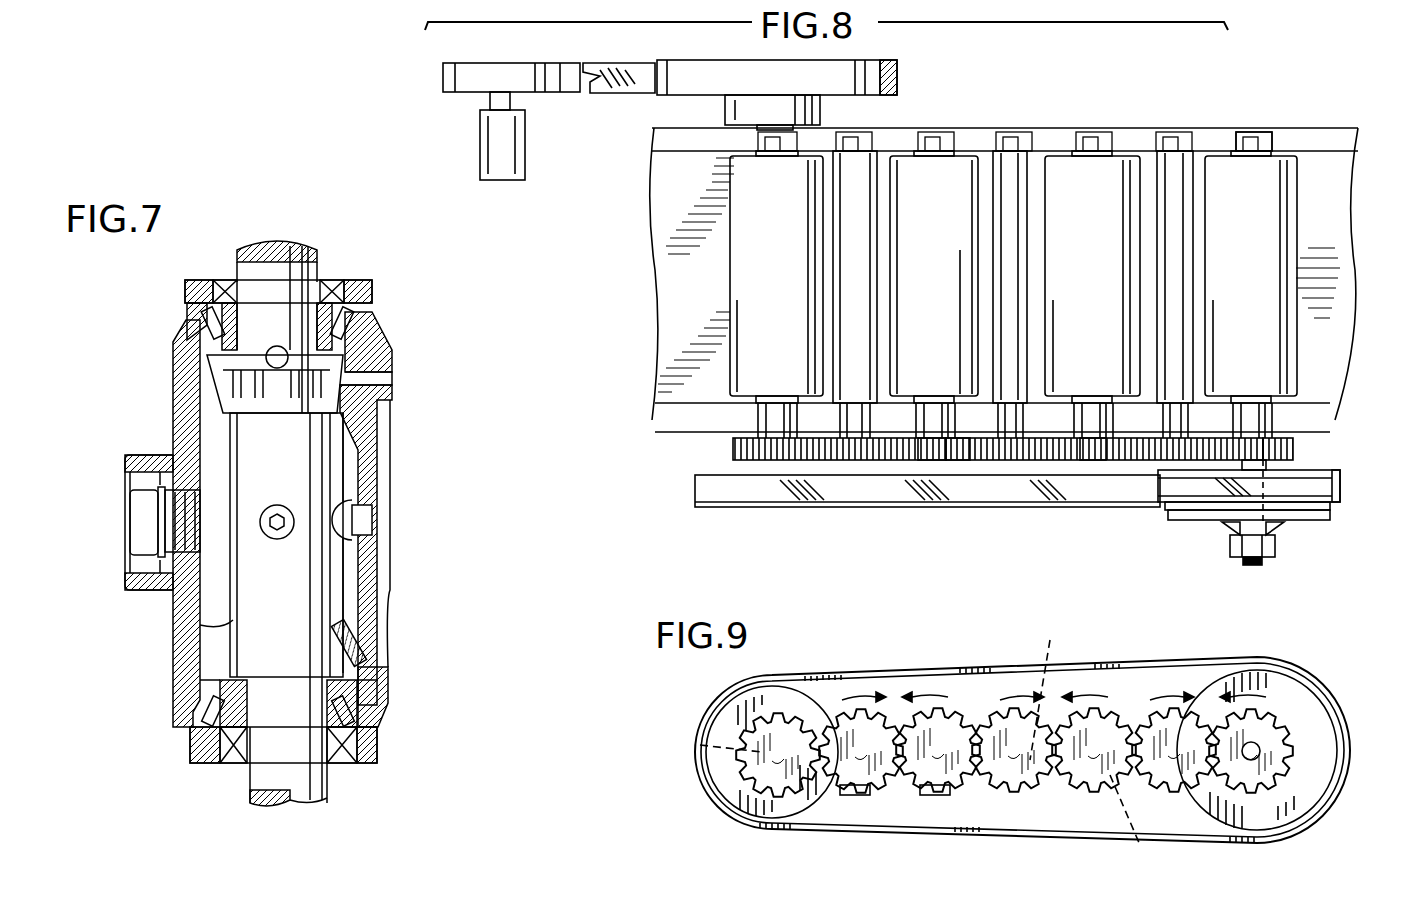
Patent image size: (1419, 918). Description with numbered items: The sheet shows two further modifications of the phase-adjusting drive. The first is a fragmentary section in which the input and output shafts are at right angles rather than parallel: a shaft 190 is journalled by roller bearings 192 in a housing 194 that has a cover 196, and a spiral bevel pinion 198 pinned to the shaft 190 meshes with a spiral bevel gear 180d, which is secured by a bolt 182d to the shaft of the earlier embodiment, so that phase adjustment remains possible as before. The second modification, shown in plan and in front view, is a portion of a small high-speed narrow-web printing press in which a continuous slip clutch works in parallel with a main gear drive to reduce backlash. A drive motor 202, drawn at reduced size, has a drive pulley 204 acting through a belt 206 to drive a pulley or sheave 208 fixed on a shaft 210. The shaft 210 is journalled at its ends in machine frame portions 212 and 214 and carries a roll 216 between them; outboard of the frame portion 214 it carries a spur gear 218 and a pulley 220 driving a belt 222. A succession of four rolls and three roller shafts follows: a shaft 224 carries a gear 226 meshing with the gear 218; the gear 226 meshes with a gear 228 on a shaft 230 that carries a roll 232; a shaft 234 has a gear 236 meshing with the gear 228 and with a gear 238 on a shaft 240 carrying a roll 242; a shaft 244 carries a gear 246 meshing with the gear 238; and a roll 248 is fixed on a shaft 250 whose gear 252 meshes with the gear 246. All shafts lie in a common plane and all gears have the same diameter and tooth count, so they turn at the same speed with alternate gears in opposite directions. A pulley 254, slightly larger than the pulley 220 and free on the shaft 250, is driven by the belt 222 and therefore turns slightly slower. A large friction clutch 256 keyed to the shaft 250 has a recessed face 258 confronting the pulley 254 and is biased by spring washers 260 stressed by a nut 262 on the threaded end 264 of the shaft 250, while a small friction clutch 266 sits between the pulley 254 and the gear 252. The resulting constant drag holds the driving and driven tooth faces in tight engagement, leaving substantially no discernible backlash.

In FIG. 7, the spiral bevel gear 180d is at (395, 470).
In FIG. 7, the bolt 182d is at (375, 520).
In FIG. 7, the shaft 190 is at (292, 262).
In FIG. 7, the roller bearings 192 is at (362, 312).
In FIG. 7, the housing 194 is at (197, 285).
In FIG. 7, the cover 196 is at (178, 362).
In FIG. 7, the spiral bevel pinion 198 is at (366, 378).
In FIG. 8, the drive motor 202 is at (510, 180).
In FIG. 8, the drive pulley 204 is at (487, 72).
In FIG. 9, the drive pulley 204 is at (790, 690).
In FIG. 8, the belt 206 is at (640, 55).
In FIG. 9, the belt 206 is at (855, 672).
In FIG. 8, the pulley or sheave 208 is at (895, 95).
In FIG. 8, the shaft 210 is at (795, 140).
In FIG. 9, the shaft 210 is at (702, 745).
In FIG. 8, the machine frame portion 212 is at (1050, 135).
In FIG. 8, the machine frame portion 214 is at (678, 420).
In FIG. 8, the roll 216 is at (728, 188).
In FIG. 8, the spur gear 218 is at (733, 448).
In FIG. 9, the spur gear 218 is at (742, 760).
In FIG. 8, the pulley 220 is at (800, 510).
In FIG. 8, the belt 222 is at (955, 480).
In FIG. 8, the shaft 224 is at (835, 285).
In FIG. 9, the shaft 224 is at (852, 795).
In FIG. 8, the gear 226 is at (860, 470).
In FIG. 9, the gear 226 is at (882, 725).
In FIG. 8, the gear 228 is at (912, 470).
In FIG. 9, the gear 228 is at (940, 795).
In FIG. 8, the shaft 230 is at (932, 400).
In FIG. 9, the shaft 230 is at (948, 785).
In FIG. 8, the roll 232 is at (955, 185).
In FIG. 8, the shaft 234 is at (1015, 238).
In FIG. 9, the shaft 234 is at (1060, 691).
In FIG. 8, the gear 236 is at (1020, 470).
In FIG. 9, the gear 236 is at (1012, 722).
In FIG. 8, the gear 238 is at (1097, 470).
In FIG. 9, the gear 238 is at (1092, 792).
In FIG. 8, the shaft 240 is at (1093, 400).
In FIG. 9, the shaft 240 is at (1143, 825).
In FIG. 8, the roll 242 is at (1112, 175).
In FIG. 8, the shaft 244 is at (1178, 178).
In FIG. 9, the shaft 244 is at (1160, 722).
In FIG. 8, the gear 246 is at (1195, 432).
In FIG. 8, the roll 248 is at (1265, 272).
In FIG. 9, the roll 248 is at (1268, 720).
In FIG. 8, the shaft 250 is at (1250, 140).
In FIG. 9, the shaft 250 is at (1275, 735).
In FIG. 8, the gear 252 is at (1295, 440).
In FIG. 8, the pulley 254 is at (1300, 490).
In FIG. 9, the pulley 254 is at (1262, 752).
In FIG. 8, the large friction clutch 256 is at (1325, 505).
In FIG. 8, the recessed face 258 is at (1210, 520).
In FIG. 8, the spring washers 260 is at (1228, 535).
In FIG. 8, the nut 262 is at (1271, 550).
In FIG. 8, the threaded end 264 is at (1252, 565).
In FIG. 8, the small friction clutch 266 is at (1285, 466).